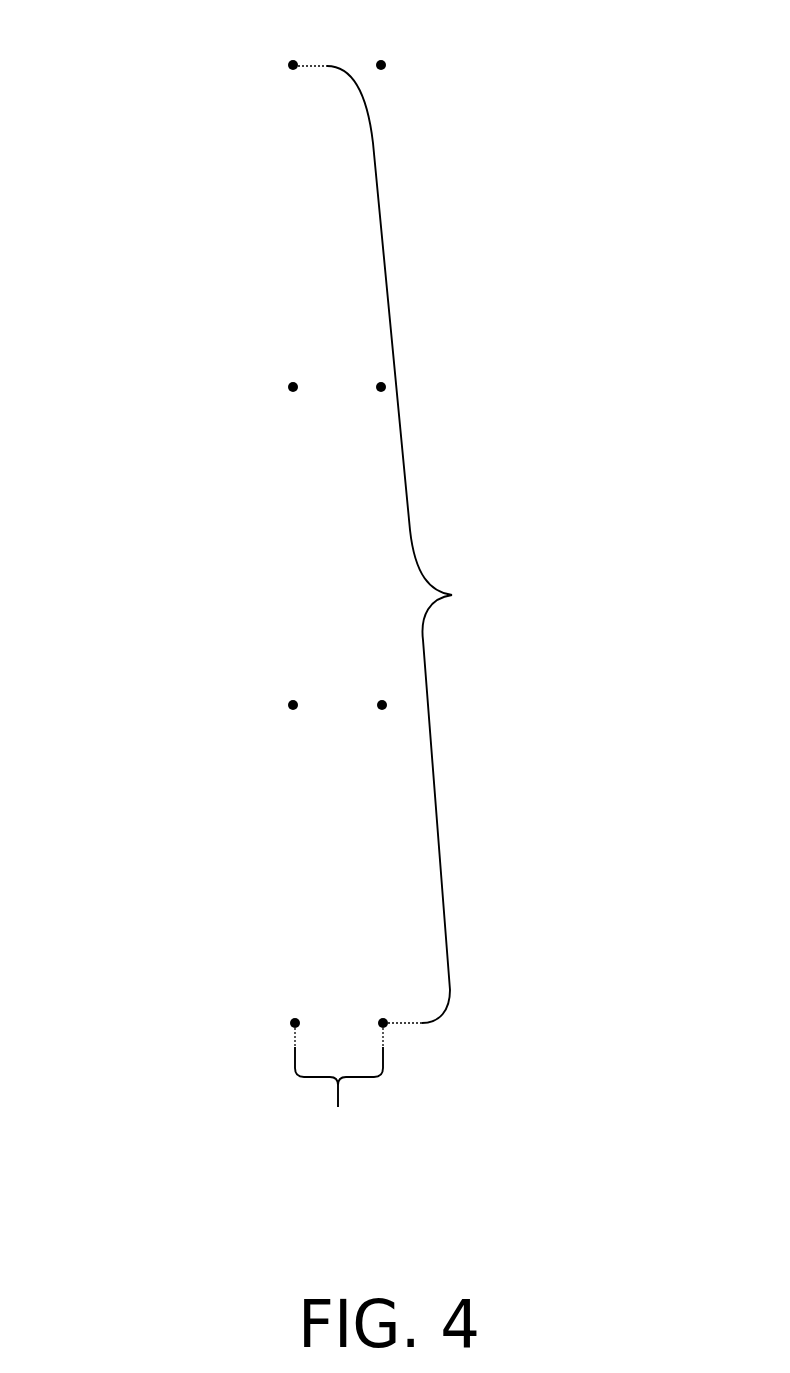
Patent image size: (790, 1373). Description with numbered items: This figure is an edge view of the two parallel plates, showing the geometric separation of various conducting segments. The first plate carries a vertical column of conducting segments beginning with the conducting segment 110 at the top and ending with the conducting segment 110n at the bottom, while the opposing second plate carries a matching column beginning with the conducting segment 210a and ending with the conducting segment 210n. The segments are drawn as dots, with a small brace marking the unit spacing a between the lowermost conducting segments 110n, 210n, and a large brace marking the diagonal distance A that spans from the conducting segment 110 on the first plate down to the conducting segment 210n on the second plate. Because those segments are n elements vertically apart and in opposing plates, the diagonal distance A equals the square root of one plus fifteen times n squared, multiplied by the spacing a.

The conducting segment 110 is at (292, 62).
The conducting segment 210a is at (418, 3).
The conducting segment 110n is at (294, 1023).
The conducting segment 210n is at (385, 1025).
The diagonal distance A is at (402, 544).
The vertical spacing a is at (339, 1095).